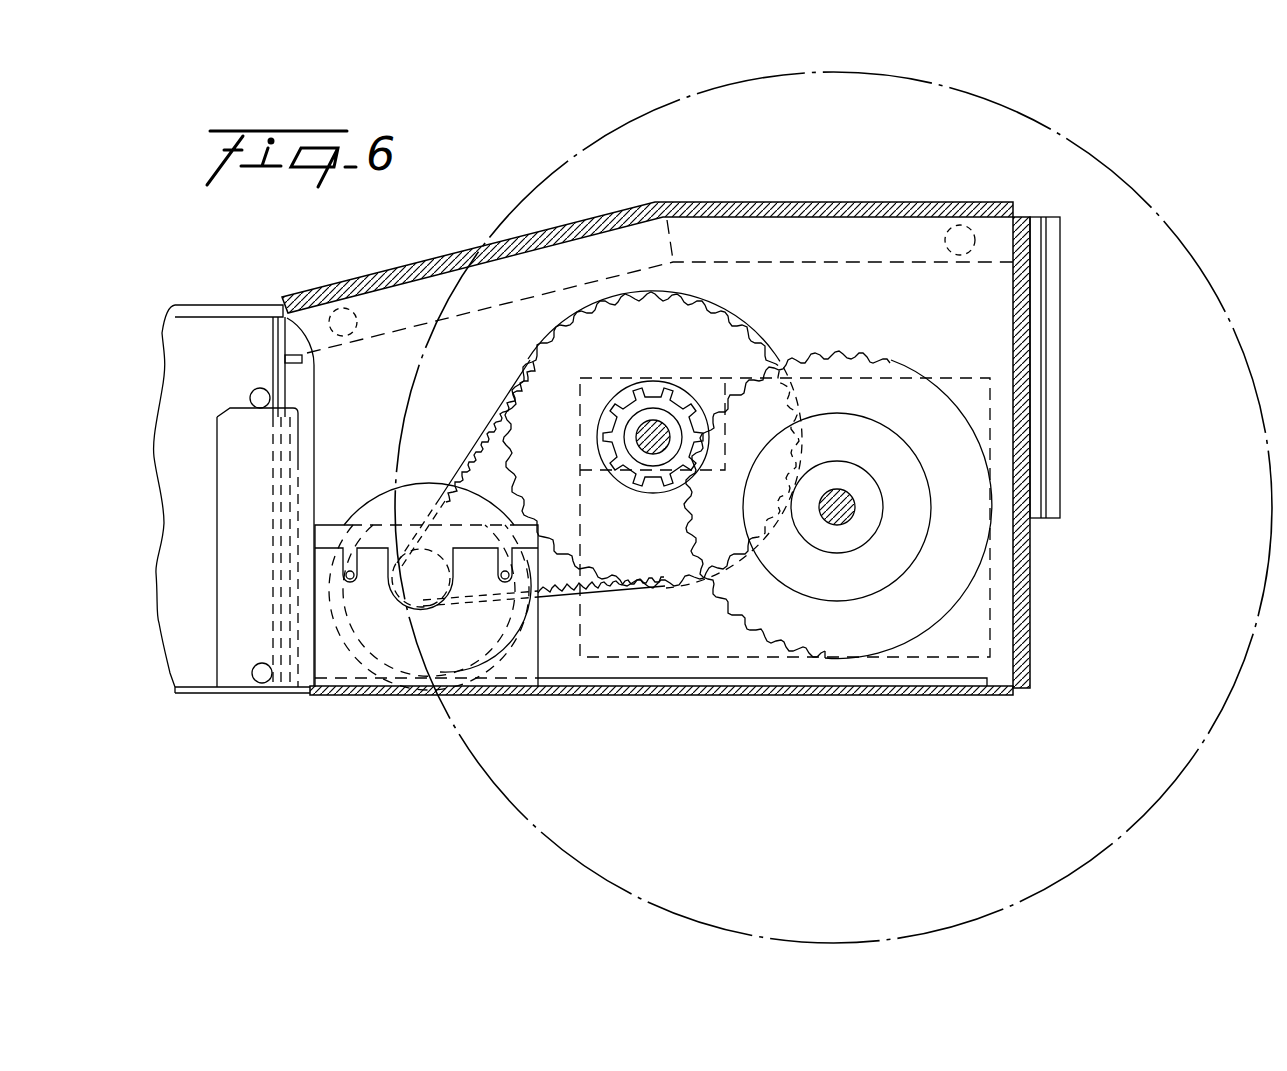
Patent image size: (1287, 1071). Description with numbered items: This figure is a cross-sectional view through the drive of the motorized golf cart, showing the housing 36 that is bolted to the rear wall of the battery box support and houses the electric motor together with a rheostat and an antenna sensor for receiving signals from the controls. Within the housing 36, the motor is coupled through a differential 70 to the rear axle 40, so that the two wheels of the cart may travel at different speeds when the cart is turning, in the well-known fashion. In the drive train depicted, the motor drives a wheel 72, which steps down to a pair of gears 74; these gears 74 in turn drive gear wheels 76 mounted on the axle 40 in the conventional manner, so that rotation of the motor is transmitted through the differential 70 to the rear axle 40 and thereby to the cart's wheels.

The housing 36 is at (410, 267).
The rear axle 40 is at (852, 522).
The differential 70 is at (812, 347).
The wheel 72 is at (641, 351).
The gears 74 is at (677, 403).
The gear wheels 76 is at (867, 353).